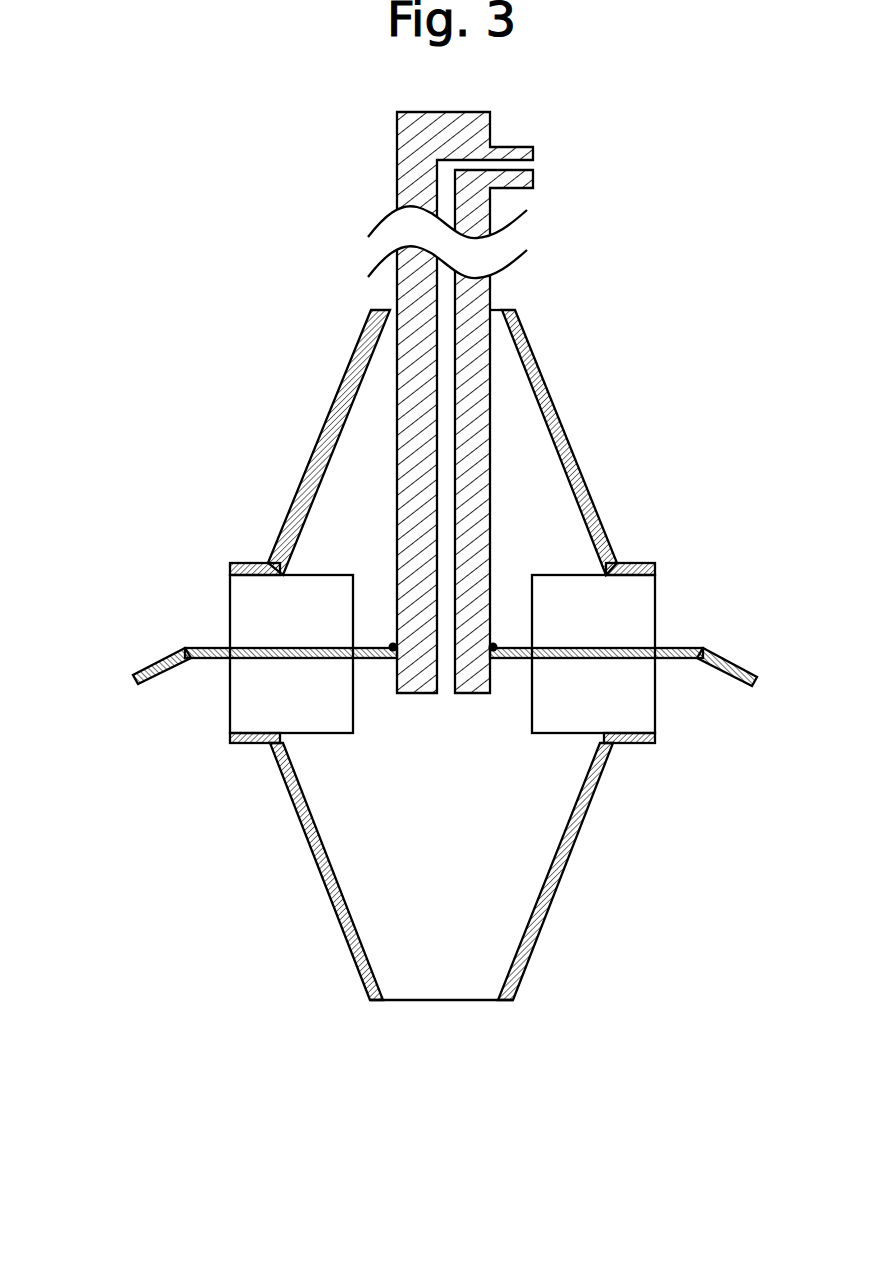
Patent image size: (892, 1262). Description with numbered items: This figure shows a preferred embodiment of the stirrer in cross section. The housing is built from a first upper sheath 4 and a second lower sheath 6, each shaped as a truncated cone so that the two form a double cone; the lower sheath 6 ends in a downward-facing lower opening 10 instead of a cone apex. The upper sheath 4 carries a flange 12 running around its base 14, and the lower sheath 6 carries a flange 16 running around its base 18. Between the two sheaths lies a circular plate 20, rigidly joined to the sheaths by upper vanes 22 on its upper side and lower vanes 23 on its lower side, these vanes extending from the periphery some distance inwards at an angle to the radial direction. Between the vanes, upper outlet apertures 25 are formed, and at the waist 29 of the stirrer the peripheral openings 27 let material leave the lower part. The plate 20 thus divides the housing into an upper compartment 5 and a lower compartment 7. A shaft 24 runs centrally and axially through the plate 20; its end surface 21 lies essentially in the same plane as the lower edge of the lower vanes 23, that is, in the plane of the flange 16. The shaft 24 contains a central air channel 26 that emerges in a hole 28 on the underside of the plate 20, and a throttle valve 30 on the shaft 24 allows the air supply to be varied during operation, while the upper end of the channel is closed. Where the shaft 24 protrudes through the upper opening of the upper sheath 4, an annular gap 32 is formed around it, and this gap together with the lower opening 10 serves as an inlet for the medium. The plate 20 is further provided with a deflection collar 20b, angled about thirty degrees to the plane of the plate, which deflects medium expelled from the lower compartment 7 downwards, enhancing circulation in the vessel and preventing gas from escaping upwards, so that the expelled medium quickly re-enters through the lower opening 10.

The first upper sheath 4 is at (580, 472).
The upper compartment 5 is at (533, 470).
The second lower sheath 6 is at (580, 837).
The lower compartment 7 is at (400, 860).
The lower opening 10 is at (450, 1012).
The flange 12 is at (638, 563).
The base 14 is at (617, 566).
The flange 16 is at (630, 747).
The base 18 is at (267, 745).
The circular plate 20 is at (505, 658).
The deflection collar 20b is at (122, 690).
The end surface 21 is at (424, 695).
The upper vanes 22 is at (265, 612).
The lower vanes 23 is at (258, 703).
The shaft 24 is at (491, 384).
The upper outlet apertures 25 is at (670, 603).
The central air channel 26 is at (454, 487).
The peripheral openings 27 is at (632, 678).
The hole 28 is at (443, 732).
The waist 29 is at (188, 565).
The throttle valve 30 is at (551, 164).
The annular gap 32 is at (390, 308).